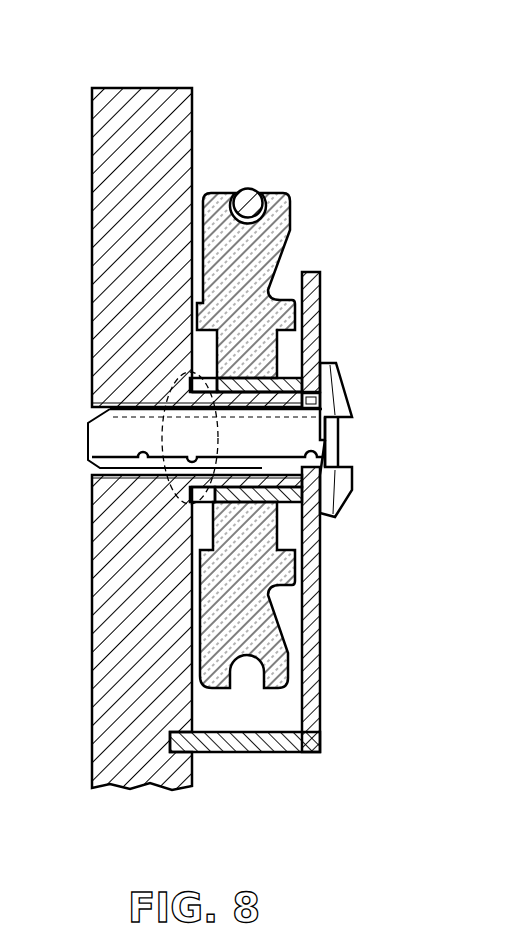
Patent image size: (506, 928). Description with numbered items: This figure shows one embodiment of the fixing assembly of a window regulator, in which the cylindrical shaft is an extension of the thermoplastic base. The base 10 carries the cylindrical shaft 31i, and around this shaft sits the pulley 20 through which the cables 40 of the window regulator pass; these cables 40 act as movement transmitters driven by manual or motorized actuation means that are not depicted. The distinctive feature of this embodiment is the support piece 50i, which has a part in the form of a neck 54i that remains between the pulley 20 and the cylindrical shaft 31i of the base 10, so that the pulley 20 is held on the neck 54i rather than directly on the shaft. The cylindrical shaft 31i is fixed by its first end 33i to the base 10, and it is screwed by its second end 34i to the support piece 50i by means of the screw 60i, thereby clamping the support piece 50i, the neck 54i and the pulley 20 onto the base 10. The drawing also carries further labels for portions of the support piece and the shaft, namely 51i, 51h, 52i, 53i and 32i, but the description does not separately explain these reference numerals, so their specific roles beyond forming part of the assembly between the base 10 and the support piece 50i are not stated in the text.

The base 10 is at (141, 137).
The pulley 20 is at (257, 252).
The cable 40 is at (245, 197).
The support piece 50i is at (216, 508).
The clip leg 51i is at (310, 327).
The clip head 51h is at (163, 438).
The bottom plate 52i is at (185, 743).
The upper engaging pawl 53i is at (308, 400).
The neck 54i is at (267, 505).
The second end 34i is at (337, 443).
The cylindrical shaft 31i is at (215, 438).
The upper hole edge 32i is at (143, 447).
The first end 33i is at (175, 493).
The screw 60i is at (150, 423).